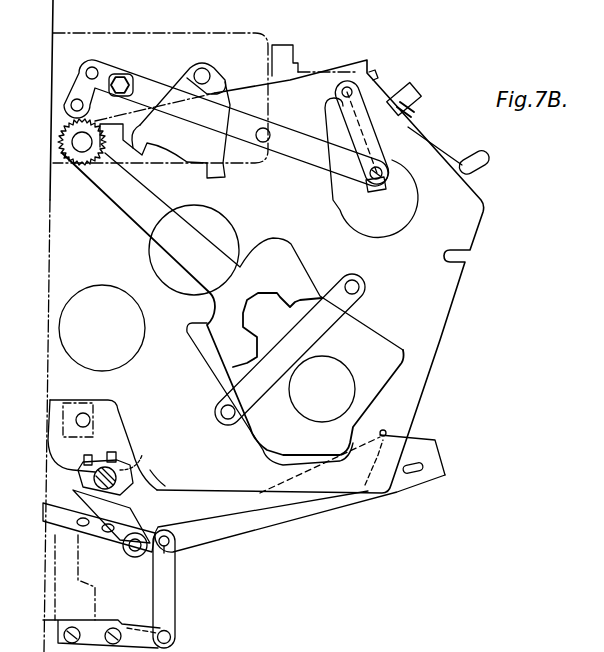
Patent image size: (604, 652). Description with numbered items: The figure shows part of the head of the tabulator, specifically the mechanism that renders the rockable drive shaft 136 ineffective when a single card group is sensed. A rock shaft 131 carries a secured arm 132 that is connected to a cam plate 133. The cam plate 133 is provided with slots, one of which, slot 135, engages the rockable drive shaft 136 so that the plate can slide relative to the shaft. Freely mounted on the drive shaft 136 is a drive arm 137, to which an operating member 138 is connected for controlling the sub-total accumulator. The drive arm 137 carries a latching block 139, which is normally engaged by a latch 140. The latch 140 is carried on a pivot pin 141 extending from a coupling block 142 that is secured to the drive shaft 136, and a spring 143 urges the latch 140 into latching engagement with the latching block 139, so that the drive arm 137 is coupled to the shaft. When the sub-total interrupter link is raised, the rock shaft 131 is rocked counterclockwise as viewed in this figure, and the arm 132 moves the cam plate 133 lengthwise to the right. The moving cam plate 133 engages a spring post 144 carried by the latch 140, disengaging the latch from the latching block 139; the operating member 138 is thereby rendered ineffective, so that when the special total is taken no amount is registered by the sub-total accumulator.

The rock shaft 131 is at (157, 630).
The arm 132 is at (160, 568).
The cam plate 133 is at (140, 447).
The slot 135 is at (116, 460).
The rockable drive shaft 136 is at (135, 465).
The drive arm 137 is at (130, 550).
The operating member 138 is at (201, 519).
The latching block 139 is at (143, 457).
The latch 140 is at (142, 477).
The pivot pin 141 is at (94, 540).
The coupling block 142 is at (61, 405).
The spring 143 is at (137, 433).
The spring post 144 is at (158, 487).